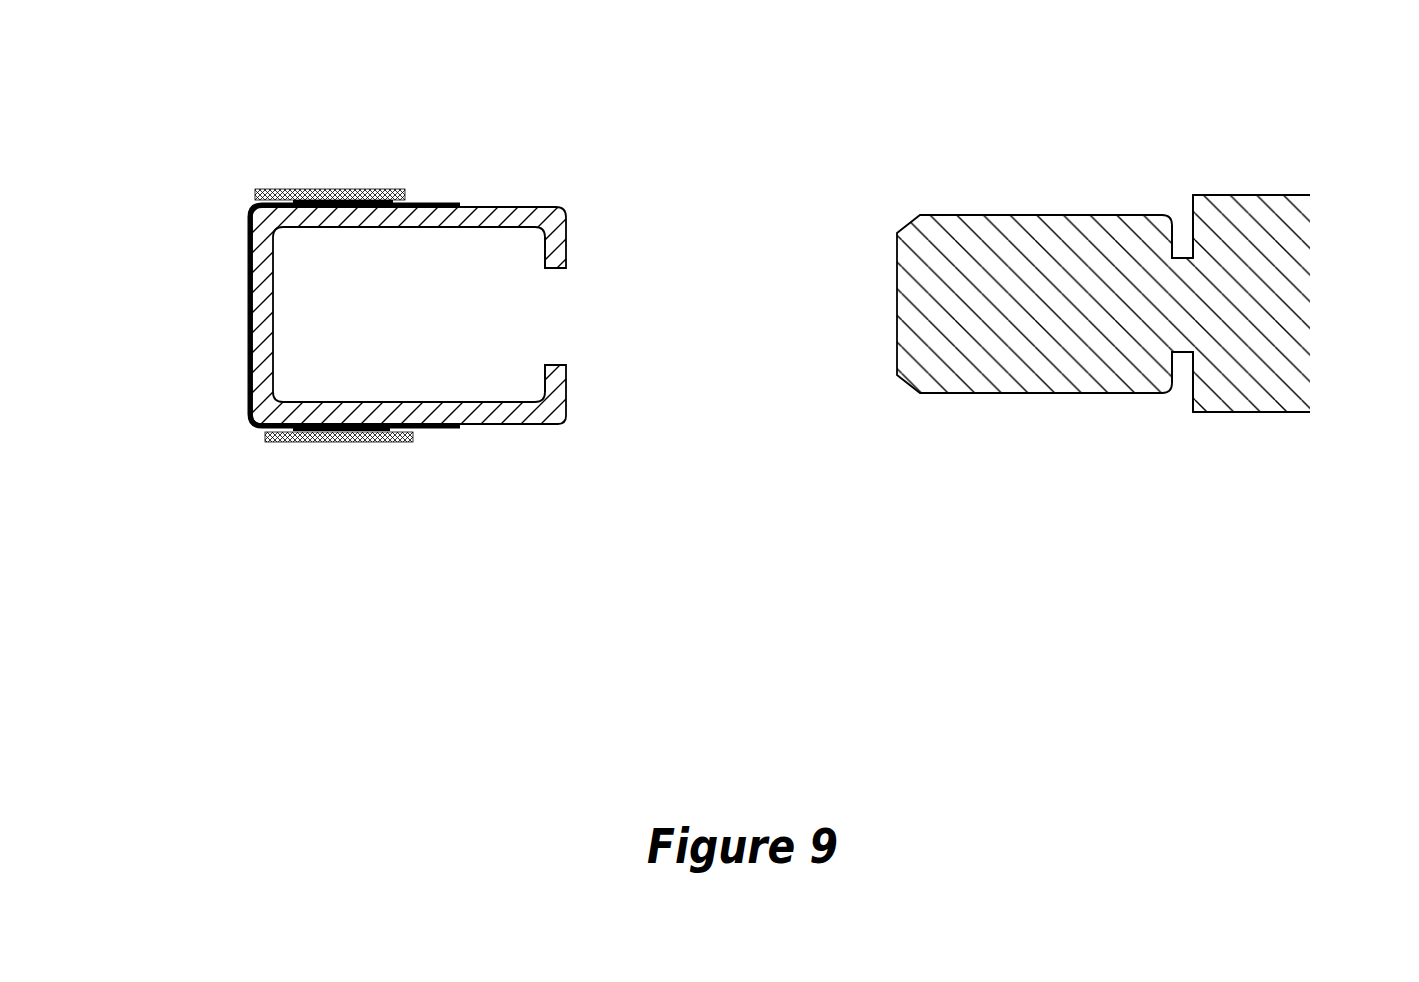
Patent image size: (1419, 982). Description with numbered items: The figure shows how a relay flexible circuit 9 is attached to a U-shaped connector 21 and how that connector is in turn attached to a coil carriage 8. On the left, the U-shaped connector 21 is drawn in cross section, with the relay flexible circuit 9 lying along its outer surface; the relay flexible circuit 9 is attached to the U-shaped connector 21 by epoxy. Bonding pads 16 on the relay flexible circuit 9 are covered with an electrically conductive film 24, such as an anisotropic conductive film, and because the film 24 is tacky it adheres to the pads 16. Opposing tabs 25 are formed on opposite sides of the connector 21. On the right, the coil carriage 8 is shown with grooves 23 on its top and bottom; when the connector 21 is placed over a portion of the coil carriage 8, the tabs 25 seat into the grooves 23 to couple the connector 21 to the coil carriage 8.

The coil carriage 8 is at (1282, 313).
The relay flexible circuit 9 is at (450, 205).
The bonding pads 16 is at (310, 193).
The U-shaped connector 21 is at (530, 212).
The grooves 23 is at (1182, 225).
The electrically conductive film 24 is at (257, 192).
The opposing tabs 25 is at (558, 367).